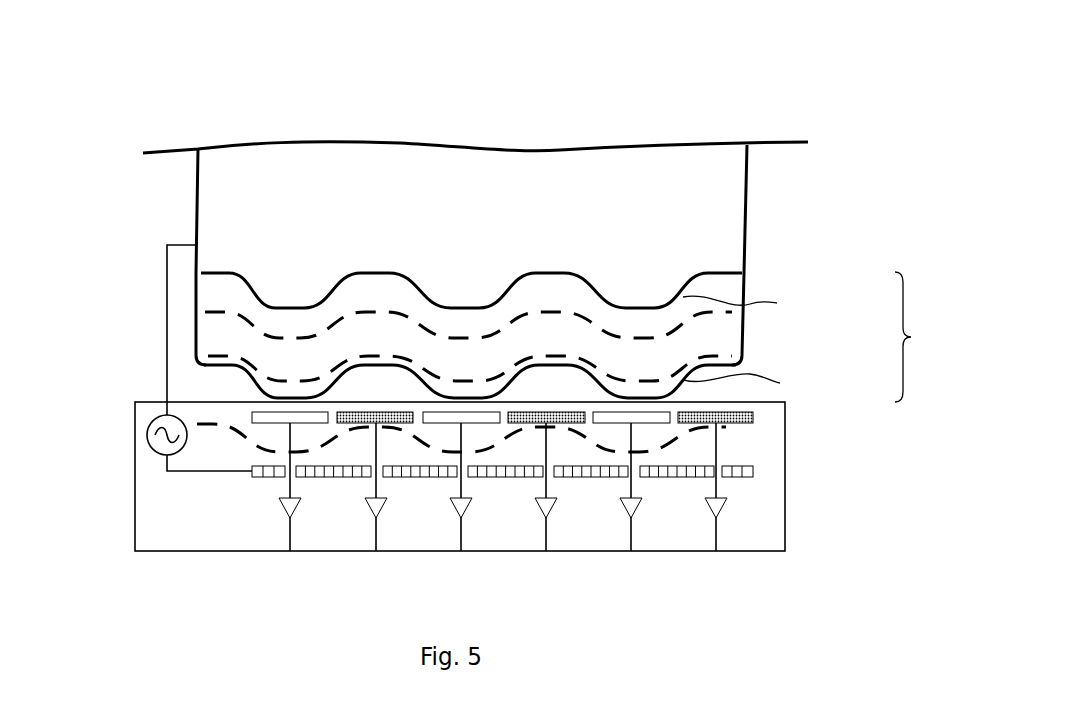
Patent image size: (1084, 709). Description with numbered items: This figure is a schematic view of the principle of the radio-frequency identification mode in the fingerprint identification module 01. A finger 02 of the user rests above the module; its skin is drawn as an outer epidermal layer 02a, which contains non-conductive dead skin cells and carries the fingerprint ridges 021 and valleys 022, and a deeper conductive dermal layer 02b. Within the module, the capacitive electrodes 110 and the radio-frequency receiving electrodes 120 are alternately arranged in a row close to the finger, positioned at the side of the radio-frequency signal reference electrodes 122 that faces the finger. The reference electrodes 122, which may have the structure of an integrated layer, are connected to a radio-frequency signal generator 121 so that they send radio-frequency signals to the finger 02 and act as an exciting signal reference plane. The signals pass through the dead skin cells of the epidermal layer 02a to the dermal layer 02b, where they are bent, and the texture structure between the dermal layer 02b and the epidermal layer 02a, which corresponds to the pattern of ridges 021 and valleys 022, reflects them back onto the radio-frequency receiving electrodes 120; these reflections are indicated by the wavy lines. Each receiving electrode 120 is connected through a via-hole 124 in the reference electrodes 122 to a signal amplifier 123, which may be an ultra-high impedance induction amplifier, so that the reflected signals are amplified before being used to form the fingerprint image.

The fingerprint identification module 01 is at (75, 114).
The finger 02 is at (497, 175).
The epidermal layer 02a is at (578, 337).
The dermal layer 02b is at (722, 192).
The ridges 021 is at (290, 398).
The valleys 022 is at (372, 365).
The capacitive electrodes 110 is at (276, 418).
The radio-frequency receiving electrodes 120 is at (740, 418).
The radio-frequency signal generator 121 is at (152, 447).
The radio-frequency signal reference electrodes 122 is at (740, 472).
The signal amplifier 123 is at (720, 508).
The via-holes 124 is at (286, 478).